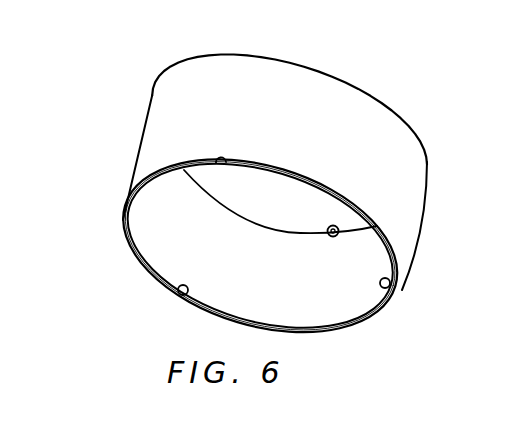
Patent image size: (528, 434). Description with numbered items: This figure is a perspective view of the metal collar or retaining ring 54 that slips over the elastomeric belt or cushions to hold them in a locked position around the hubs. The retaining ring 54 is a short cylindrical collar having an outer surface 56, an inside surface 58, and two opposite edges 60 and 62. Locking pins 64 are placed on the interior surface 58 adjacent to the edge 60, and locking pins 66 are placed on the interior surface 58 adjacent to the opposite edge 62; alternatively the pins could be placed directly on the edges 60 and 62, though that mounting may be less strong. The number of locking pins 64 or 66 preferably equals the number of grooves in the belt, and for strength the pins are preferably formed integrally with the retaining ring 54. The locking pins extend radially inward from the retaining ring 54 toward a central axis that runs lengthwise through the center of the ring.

The retaining ring 54 is at (273, 196).
The outer surface 56 is at (370, 121).
The inside surface 58 is at (347, 310).
The edge 60 is at (258, 57).
The edge 62 is at (127, 232).
The locking pins 64 is at (333, 226).
The locking pins 66 is at (223, 167).